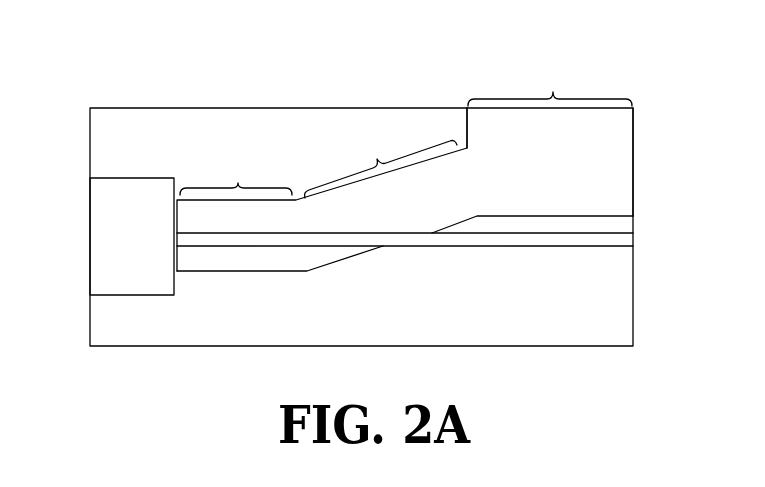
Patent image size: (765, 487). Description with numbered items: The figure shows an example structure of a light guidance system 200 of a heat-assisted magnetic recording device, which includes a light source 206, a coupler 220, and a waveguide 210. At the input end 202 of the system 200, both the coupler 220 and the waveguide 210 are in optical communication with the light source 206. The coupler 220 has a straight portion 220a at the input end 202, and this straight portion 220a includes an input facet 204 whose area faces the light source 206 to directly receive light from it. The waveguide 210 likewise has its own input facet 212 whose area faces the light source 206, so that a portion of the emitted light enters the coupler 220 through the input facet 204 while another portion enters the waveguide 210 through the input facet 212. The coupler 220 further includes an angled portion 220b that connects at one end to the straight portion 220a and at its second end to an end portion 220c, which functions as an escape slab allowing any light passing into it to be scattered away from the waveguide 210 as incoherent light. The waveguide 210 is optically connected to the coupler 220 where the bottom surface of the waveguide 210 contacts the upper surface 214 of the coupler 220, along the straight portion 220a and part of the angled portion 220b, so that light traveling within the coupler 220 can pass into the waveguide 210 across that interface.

The light guidance system 200 is at (598, 58).
The input end 202 is at (209, 338).
The input facet 204 is at (150, 216).
The light source 206 is at (107, 272).
The waveguide 210 is at (612, 238).
The input facet 212 is at (148, 238).
The upper surface 214 is at (280, 257).
The coupler 220 is at (622, 169).
The straight portion 220a is at (238, 183).
The angled portion 220b is at (377, 159).
The end portion 220c is at (550, 82).